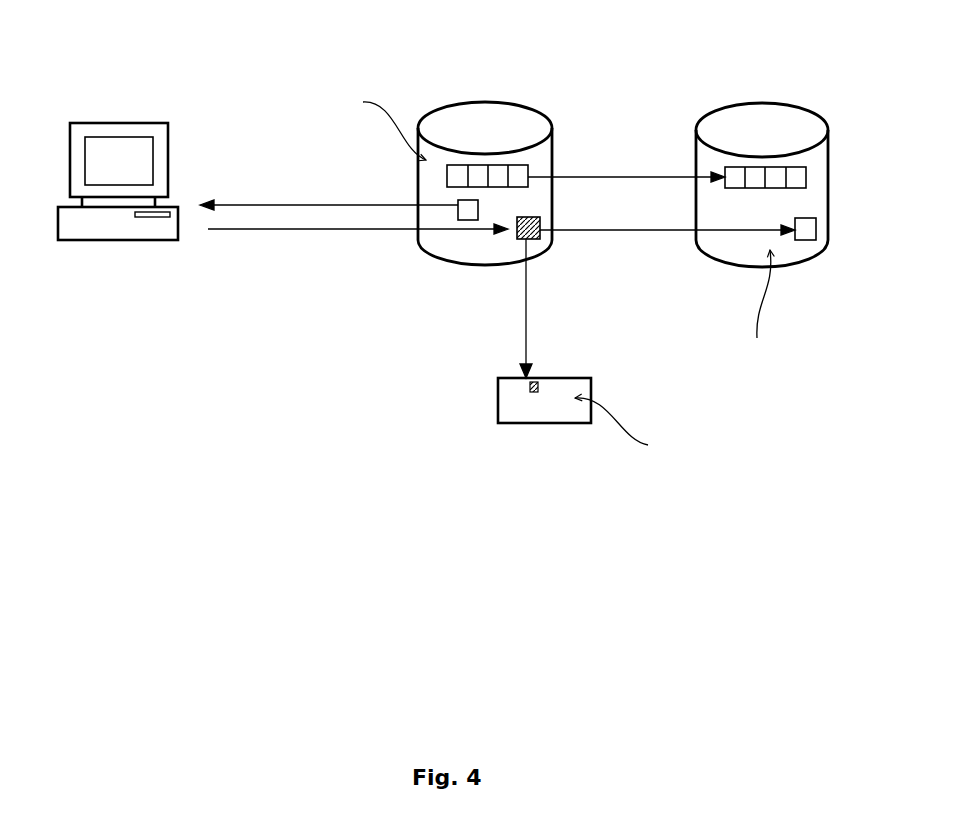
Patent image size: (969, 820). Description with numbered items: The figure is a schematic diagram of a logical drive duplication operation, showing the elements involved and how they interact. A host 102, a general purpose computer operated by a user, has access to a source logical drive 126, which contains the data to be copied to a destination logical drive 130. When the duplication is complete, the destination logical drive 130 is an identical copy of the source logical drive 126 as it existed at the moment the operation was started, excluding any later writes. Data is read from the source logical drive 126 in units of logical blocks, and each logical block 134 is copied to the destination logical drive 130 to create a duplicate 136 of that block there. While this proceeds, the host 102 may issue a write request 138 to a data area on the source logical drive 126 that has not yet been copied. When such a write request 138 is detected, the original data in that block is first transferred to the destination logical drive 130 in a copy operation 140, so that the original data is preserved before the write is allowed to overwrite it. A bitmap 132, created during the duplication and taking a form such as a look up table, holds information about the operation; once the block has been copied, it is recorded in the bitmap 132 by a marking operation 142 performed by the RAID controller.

The host 102 is at (122, 150).
The source logical drive 126 is at (470, 118).
The destination logical drive 130 is at (751, 120).
The bitmap 132 is at (552, 425).
The logical block 134 is at (524, 165).
The duplicate of the logical block 136 is at (735, 173).
The write request 138 is at (329, 232).
The copy operation 140 is at (665, 232).
The marking operation 142 is at (523, 336).